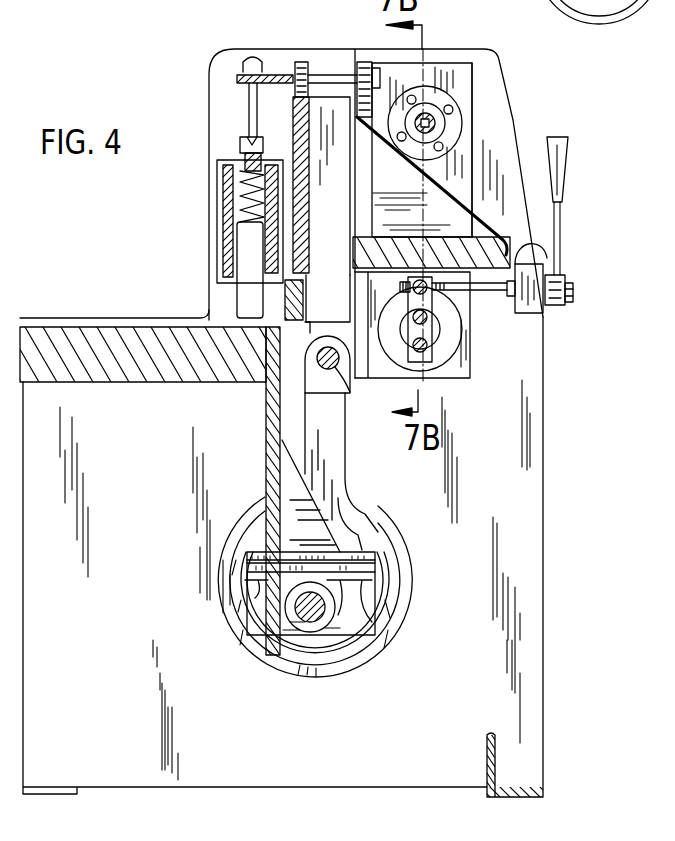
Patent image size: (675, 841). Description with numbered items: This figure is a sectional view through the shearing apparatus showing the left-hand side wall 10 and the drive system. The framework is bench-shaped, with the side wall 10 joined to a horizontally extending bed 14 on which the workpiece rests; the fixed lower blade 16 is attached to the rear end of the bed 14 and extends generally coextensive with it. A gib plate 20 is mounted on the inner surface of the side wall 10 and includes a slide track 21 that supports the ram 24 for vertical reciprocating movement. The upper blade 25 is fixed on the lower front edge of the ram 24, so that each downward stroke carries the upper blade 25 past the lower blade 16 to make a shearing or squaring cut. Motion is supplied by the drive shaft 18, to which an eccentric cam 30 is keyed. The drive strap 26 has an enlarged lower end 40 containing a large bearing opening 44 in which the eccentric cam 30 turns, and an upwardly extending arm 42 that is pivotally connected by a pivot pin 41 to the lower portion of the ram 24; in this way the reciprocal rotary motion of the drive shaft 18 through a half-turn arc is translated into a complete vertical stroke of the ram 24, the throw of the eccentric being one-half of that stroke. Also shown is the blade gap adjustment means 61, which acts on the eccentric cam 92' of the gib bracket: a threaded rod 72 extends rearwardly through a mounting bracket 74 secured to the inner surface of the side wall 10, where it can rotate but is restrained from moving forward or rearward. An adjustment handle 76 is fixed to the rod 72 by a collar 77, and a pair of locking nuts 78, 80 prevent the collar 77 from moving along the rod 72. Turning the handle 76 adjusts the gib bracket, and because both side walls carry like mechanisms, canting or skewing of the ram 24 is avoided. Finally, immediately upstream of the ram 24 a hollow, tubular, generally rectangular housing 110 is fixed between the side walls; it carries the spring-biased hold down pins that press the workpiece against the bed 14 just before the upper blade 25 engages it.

The side wall 10 is at (500, 486).
The bed 14 is at (95, 327).
The fixed lower blade 16 is at (264, 393).
The drive shaft 18 is at (312, 612).
The gib plate 20 is at (465, 88).
The slide track 21 is at (328, 298).
The ram 24 is at (345, 241).
The upper blade 25 is at (292, 303).
The drive strap 26 is at (345, 466).
The eccentric cam 30 is at (362, 610).
The enlarged lower end 40 is at (392, 533).
The pivot pin 41 is at (348, 389).
The upwardly extending arm 42 is at (333, 425).
The bearing opening 44 is at (349, 532).
The adjustment means 61 is at (462, 298).
The threaded rod 72 is at (491, 291).
The mounting bracket 74 is at (544, 318).
The adjustment handle 76 is at (562, 173).
The collar 77 is at (560, 300).
The locking nut 78 is at (547, 243).
The locking nut 80 is at (574, 293).
The eccentric cam 92' is at (514, 150).
The housing 110 is at (225, 199).